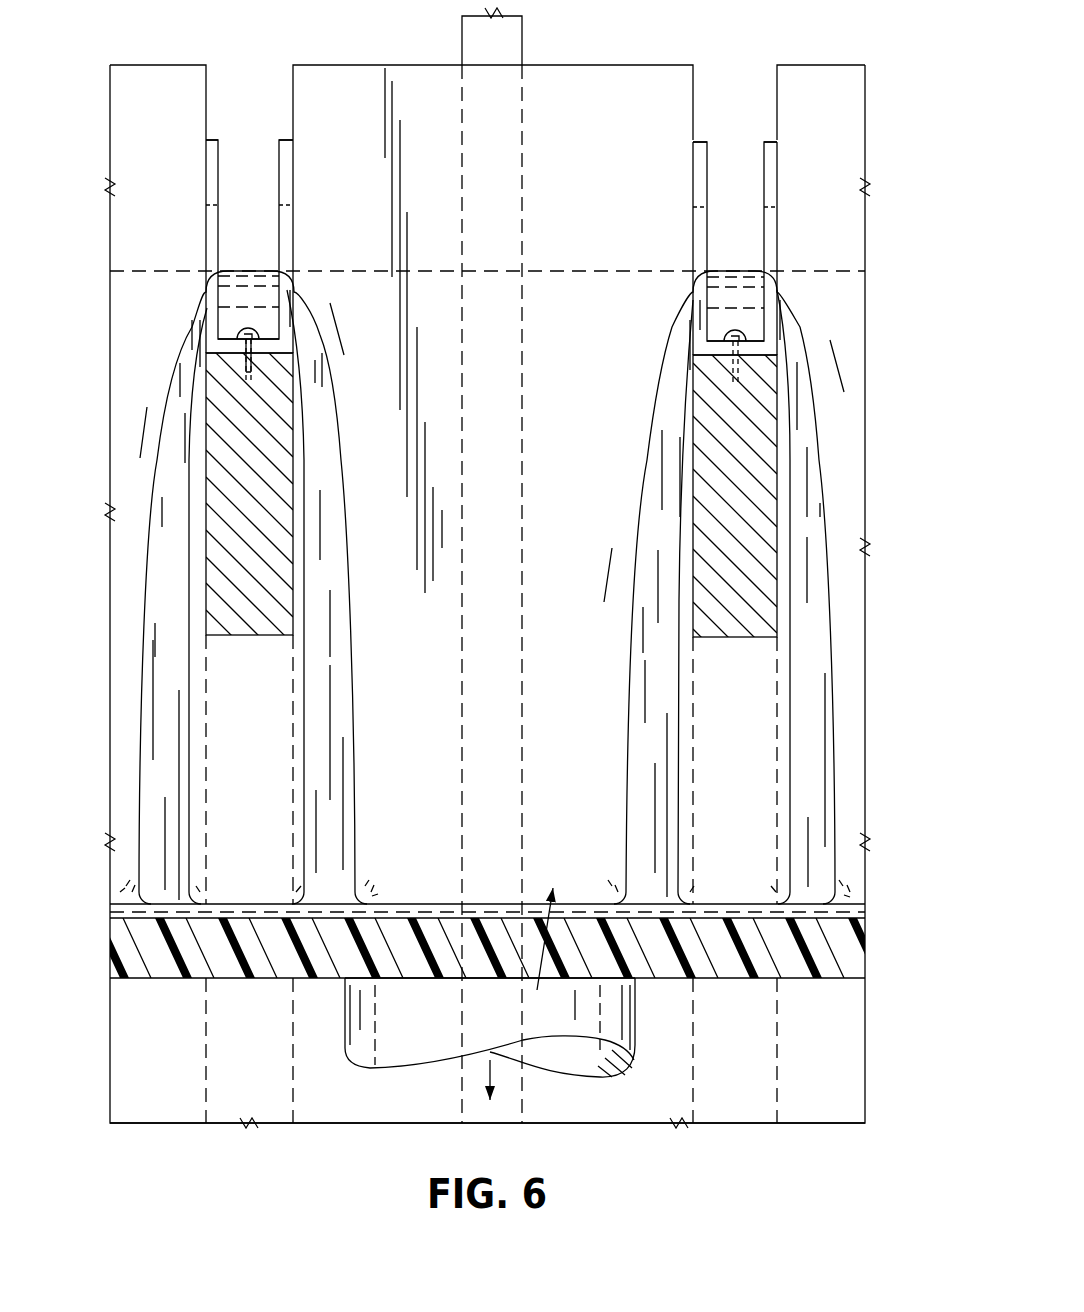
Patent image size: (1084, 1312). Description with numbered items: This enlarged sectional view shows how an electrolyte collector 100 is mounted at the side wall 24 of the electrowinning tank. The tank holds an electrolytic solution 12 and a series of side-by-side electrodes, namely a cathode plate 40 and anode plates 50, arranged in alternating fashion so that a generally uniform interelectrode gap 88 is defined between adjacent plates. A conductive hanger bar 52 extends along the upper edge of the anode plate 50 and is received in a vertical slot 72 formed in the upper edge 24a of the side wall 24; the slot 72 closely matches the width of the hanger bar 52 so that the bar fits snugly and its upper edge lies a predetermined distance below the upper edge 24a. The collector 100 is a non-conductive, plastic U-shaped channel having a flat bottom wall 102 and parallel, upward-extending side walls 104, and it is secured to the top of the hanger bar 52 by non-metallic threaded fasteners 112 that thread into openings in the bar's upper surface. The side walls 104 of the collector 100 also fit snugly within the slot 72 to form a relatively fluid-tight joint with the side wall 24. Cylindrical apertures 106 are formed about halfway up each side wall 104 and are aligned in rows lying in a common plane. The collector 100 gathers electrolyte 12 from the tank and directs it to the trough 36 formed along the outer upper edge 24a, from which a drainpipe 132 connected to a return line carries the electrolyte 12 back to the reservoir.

The electrolytic solution 12 is at (320, 712).
The side wall 24 is at (160, 1107).
The upper edge 24a is at (605, 65).
The trough 36 is at (544, 953).
The cathode plate 40 is at (478, 48).
The anode plate 50 is at (240, 1093).
The hanger bar 52 is at (267, 517).
The vertical slot 72 is at (207, 78).
The interelectrode gap 88 is at (347, 1087).
The electrolyte collector 100 is at (294, 157).
The bottom wall 102 is at (273, 348).
The side wall 104 is at (290, 139).
The aperture 106 is at (208, 233).
The threaded fastener 112 is at (243, 333).
The drainpipe 132 is at (410, 1052).